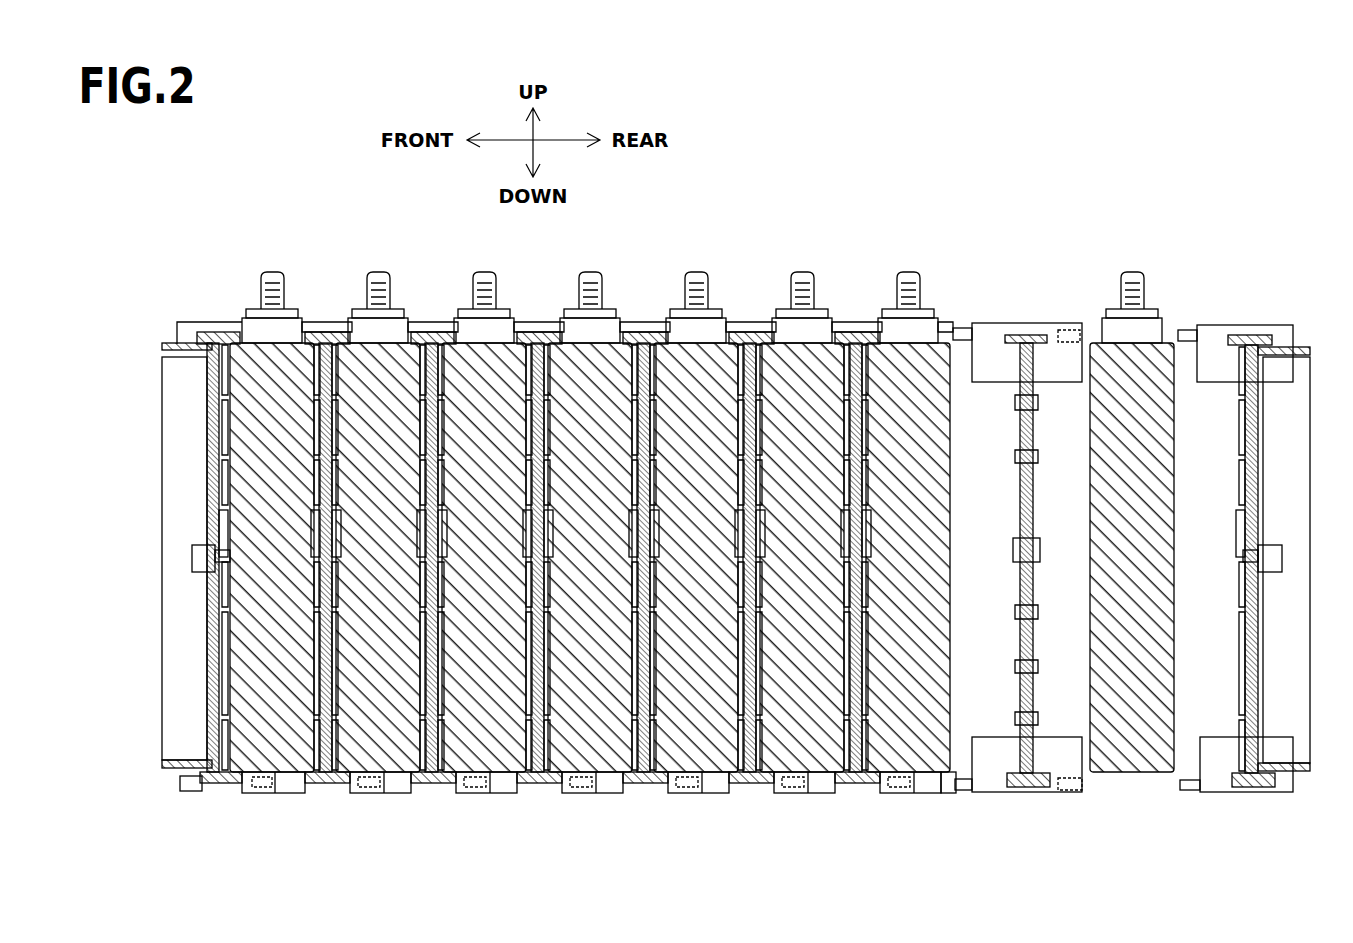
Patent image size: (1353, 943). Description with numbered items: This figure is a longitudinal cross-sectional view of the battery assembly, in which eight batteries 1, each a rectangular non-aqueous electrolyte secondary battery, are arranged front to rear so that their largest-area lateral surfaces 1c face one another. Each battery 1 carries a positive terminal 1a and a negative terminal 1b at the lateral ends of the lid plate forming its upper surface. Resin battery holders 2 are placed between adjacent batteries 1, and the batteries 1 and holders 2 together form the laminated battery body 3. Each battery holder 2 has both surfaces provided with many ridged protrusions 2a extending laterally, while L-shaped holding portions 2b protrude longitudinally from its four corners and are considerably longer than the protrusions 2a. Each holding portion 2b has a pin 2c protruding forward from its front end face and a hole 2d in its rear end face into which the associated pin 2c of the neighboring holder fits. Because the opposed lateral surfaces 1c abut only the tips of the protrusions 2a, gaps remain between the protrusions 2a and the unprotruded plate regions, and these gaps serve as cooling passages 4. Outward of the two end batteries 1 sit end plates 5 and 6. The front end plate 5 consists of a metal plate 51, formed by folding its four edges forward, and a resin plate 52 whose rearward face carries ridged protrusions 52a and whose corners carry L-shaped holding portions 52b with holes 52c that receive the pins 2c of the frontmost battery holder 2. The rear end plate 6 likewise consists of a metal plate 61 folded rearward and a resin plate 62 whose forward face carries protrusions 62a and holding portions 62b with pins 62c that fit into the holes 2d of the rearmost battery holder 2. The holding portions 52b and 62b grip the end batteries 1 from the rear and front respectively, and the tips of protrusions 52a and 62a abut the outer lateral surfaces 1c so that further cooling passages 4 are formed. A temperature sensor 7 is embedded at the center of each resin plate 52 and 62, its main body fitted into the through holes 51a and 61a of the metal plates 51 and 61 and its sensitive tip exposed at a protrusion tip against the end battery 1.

The battery 1 is at (283, 385).
The positive terminal 1a is at (376, 288).
The negative terminal 1b is at (270, 288).
The lateral surface 1c is at (207, 705).
The battery holder 2 is at (330, 787).
The protrusion 2a is at (311, 530).
The holding portion 2b is at (330, 327).
The pin 2c is at (962, 328).
The hole 2d is at (1069, 330).
The laminated battery body 3 is at (1175, 230).
The cooling passage 4 is at (316, 645).
The end plate 5 is at (725, 536).
The end plate 6 is at (1235, 538).
The temperature sensor 7 is at (194, 545).
The metal plate 51 is at (205, 460).
The through hole 51a is at (197, 573).
The resin plate 52 is at (229, 572).
The protrusion 52a is at (232, 468).
The holding portion 52b is at (205, 322).
The hole 52c is at (222, 783).
The metal plate 61 is at (1266, 465).
The through hole 61a is at (1275, 575).
The resin plate 62 is at (1226, 572).
The protrusion 62a is at (1242, 468).
The holding portion 62b is at (1248, 330).
The pin 62c is at (1190, 330).